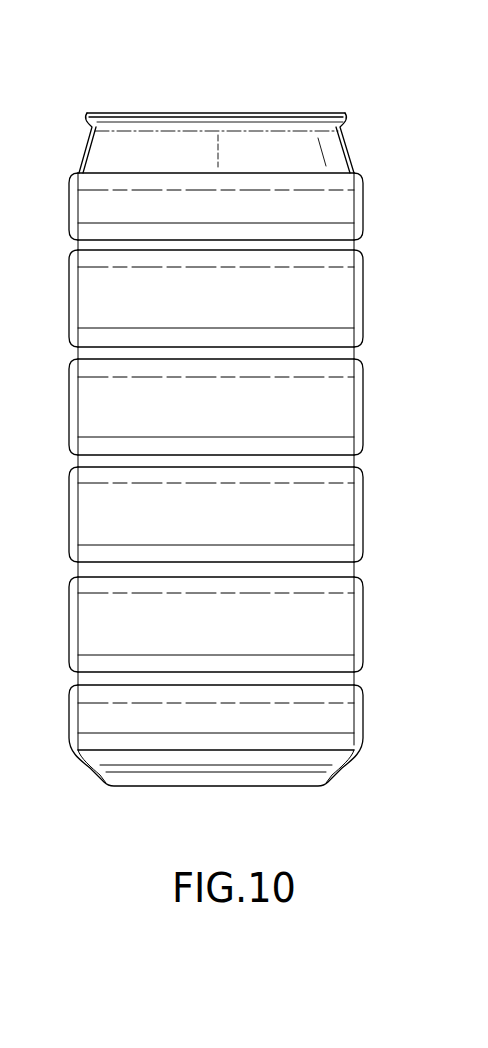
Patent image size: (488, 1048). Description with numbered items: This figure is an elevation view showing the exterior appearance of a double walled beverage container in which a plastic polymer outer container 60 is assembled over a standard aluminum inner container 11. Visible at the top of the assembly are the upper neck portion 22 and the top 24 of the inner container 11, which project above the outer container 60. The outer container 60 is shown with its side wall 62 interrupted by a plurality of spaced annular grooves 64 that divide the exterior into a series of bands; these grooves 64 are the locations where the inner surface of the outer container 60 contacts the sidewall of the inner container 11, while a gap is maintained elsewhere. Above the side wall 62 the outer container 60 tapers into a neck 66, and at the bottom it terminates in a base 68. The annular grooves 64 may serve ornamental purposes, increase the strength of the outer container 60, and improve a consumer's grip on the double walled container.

The inner container 11 is at (368, 138).
The upper neck portion 22 is at (94, 140).
The top 24 is at (222, 96).
The outer container 60 is at (398, 360).
The side wall 62 is at (365, 298).
The annular grooves 64 is at (358, 246).
The neck 66 is at (358, 180).
The base 68 is at (156, 802).